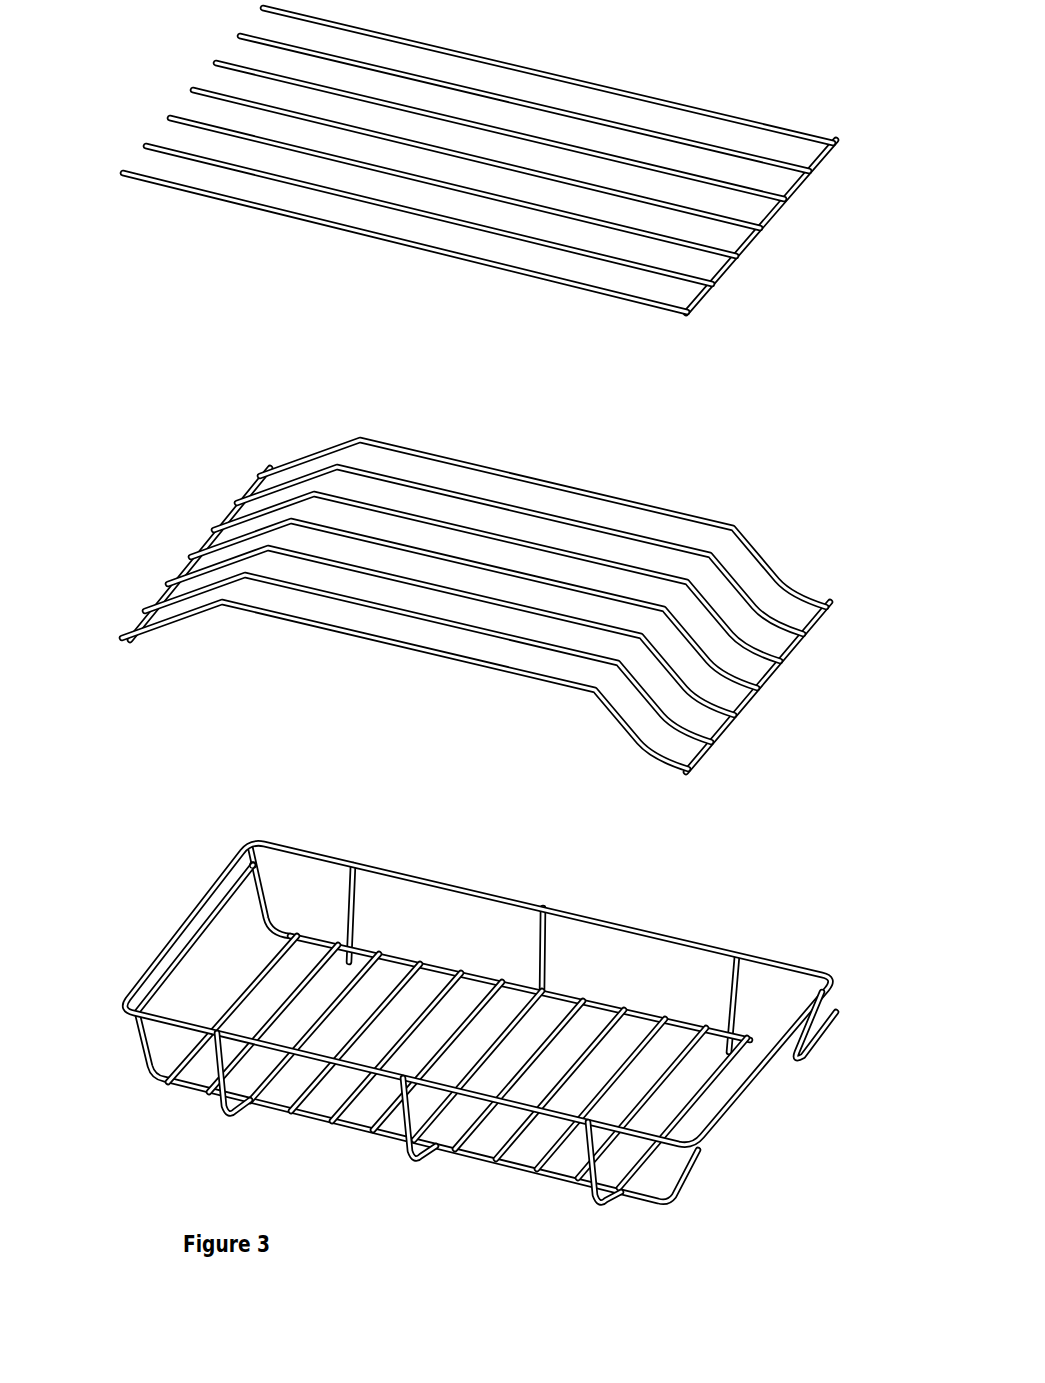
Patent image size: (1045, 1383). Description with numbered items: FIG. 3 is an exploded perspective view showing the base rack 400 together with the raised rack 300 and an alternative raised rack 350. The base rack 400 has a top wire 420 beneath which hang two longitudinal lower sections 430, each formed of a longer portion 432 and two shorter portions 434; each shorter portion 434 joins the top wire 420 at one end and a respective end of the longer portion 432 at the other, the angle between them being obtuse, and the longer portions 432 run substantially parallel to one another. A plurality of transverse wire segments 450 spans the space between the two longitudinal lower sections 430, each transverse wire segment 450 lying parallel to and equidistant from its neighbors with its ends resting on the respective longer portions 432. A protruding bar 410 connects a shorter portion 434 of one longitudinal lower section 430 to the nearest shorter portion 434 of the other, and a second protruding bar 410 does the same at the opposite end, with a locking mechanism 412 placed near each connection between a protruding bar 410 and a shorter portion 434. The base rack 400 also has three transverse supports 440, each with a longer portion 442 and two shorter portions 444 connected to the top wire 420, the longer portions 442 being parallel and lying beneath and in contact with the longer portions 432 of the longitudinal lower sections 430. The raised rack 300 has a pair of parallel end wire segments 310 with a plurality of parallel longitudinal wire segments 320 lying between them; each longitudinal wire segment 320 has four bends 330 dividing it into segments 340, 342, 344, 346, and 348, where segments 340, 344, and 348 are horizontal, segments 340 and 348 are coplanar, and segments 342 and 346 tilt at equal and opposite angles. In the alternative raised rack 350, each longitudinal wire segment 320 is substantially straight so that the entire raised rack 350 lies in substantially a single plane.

The raised rack 300 is at (517, 471).
The end wire segments 310 is at (807, 185).
The longitudinal wire segments 320 is at (518, 471).
The bends 330 is at (518, 565).
The segment 340 is at (252, 503).
The segment 342 is at (285, 492).
The segment 344 is at (362, 472).
The segment 346 is at (717, 615).
The segment 348 is at (765, 680).
The raised rack 350 is at (568, 72).
The base rack 400 is at (429, 997).
The protruding bar 410 is at (463, 993).
The locking mechanism 412 is at (245, 888).
The top wire 420 is at (110, 1005).
The longitudinal lower sections 430 is at (435, 960).
The longer portion 432 is at (387, 947).
The shorter portions 434 is at (267, 925).
The transverse supports 440 is at (388, 1140).
The longer portion 442 is at (540, 995).
The shorter portions 444 is at (730, 947).
The transverse wire segments 450 is at (627, 1123).